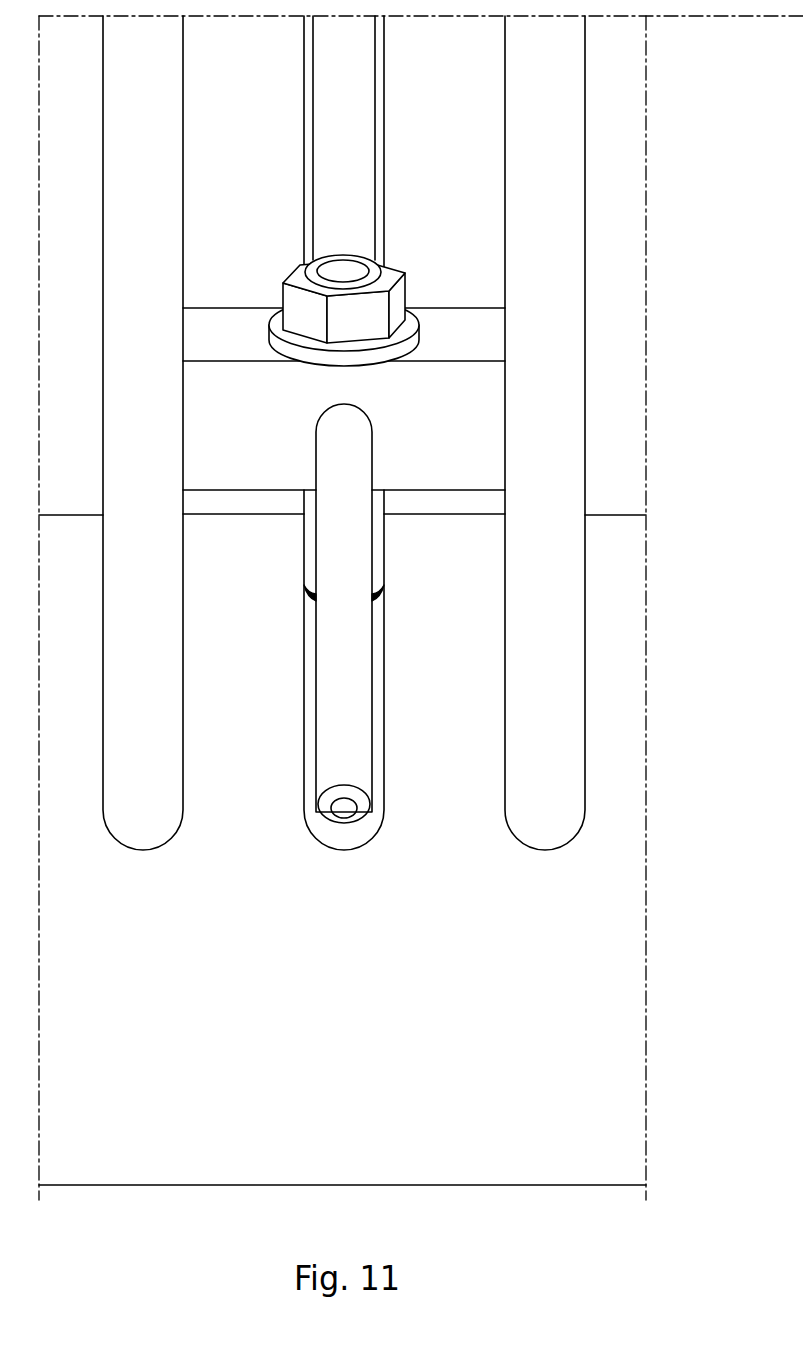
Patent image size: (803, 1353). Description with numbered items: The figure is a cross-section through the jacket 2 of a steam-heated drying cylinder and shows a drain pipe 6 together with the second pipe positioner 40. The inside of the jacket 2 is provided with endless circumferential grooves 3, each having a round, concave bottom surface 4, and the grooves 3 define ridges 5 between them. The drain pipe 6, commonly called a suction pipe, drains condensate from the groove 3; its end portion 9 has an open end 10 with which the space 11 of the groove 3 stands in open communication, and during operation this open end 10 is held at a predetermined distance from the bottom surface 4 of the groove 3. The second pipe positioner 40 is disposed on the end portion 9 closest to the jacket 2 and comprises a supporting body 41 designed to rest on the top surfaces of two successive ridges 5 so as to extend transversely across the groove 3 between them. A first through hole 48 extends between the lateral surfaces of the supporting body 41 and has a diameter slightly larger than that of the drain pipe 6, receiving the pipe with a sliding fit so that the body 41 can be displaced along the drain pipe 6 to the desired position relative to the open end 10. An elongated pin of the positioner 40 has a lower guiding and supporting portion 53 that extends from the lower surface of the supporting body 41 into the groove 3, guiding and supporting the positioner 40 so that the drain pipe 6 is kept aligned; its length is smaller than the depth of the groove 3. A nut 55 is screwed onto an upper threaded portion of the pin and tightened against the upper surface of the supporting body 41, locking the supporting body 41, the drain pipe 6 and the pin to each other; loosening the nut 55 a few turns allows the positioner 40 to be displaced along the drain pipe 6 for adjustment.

The jacket 2 is at (623, 930).
The groove 3 is at (380, 60).
The bottom surface 4 is at (323, 845).
The ridge 5 is at (218, 177).
The drain pipe 6 is at (354, 126).
The end portion 9 is at (357, 653).
The open end 10 is at (357, 815).
The space 11 is at (377, 623).
The second pipe positioner 40 is at (373, 273).
The supporting body 41 is at (235, 468).
The first through hole 48 is at (352, 409).
The lower guiding and supporting portion 53 is at (377, 530).
The nut 55 is at (394, 299).